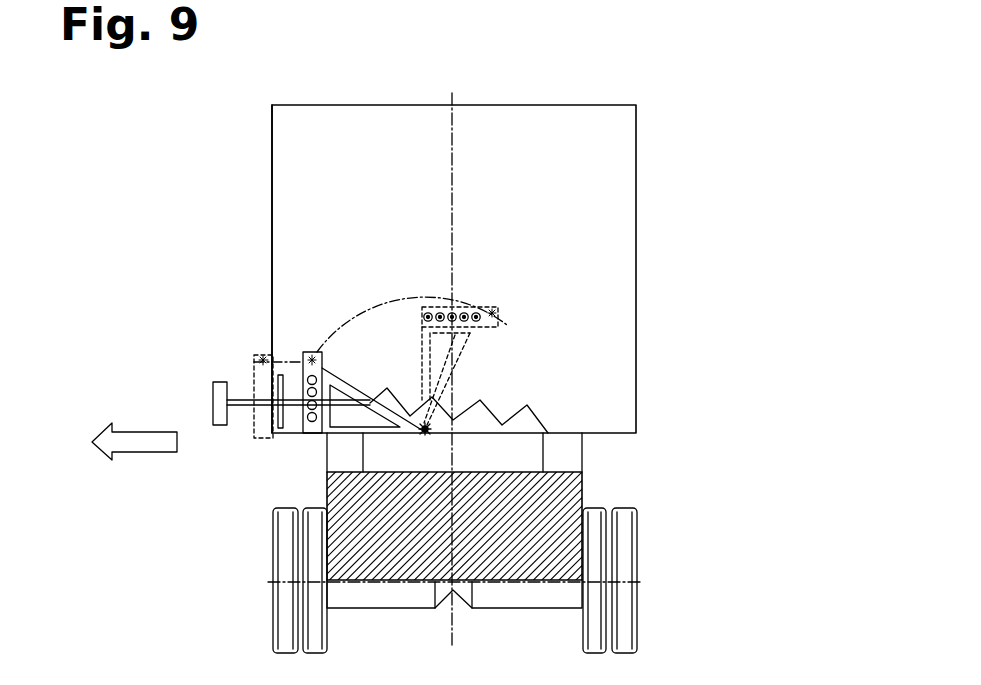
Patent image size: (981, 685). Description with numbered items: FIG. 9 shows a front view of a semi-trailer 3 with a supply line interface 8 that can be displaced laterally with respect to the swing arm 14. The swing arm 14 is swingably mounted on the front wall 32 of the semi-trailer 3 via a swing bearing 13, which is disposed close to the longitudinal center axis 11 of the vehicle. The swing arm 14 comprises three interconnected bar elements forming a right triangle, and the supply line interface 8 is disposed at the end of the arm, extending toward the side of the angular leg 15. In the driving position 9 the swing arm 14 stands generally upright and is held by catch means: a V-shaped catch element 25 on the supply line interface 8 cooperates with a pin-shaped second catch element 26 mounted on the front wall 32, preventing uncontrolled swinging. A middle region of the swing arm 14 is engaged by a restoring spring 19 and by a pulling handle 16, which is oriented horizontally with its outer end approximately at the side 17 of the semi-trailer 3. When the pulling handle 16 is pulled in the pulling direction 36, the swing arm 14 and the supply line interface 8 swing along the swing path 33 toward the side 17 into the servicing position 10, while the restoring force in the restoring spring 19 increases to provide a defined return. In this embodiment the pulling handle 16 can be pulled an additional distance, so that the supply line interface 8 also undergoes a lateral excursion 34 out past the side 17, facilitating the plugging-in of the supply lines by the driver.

The semi-trailer 3 is at (454, 269).
The front wall 32 is at (604, 156).
The supply line interface 8 is at (448, 260).
The driving position 9 is at (551, 223).
The servicing position 10 is at (197, 370).
The longitudinal center axis 11 is at (452, 150).
The swing bearing 13 is at (425, 433).
The swing arm 14 is at (361, 433).
The angular leg 15 is at (473, 332).
The pulling handle 16 is at (213, 405).
The side 17 is at (268, 118).
The restoring spring 19 is at (527, 410).
The V-shaped catch element 25 is at (503, 307).
The second catch element 26 is at (503, 318).
The swing path 33 is at (390, 300).
The lateral excursion 34 is at (258, 438).
The pulling direction 36 is at (145, 452).